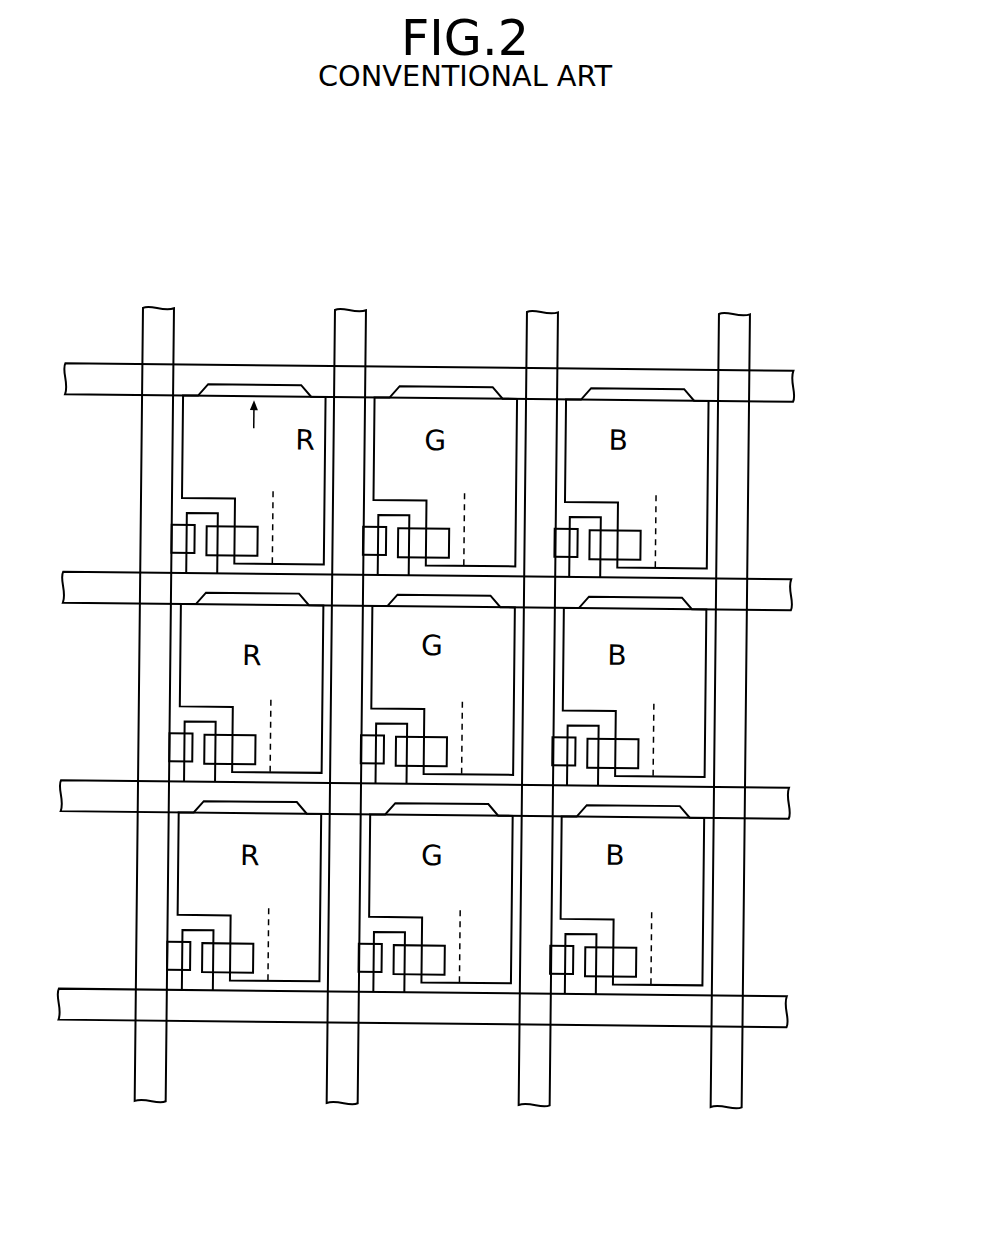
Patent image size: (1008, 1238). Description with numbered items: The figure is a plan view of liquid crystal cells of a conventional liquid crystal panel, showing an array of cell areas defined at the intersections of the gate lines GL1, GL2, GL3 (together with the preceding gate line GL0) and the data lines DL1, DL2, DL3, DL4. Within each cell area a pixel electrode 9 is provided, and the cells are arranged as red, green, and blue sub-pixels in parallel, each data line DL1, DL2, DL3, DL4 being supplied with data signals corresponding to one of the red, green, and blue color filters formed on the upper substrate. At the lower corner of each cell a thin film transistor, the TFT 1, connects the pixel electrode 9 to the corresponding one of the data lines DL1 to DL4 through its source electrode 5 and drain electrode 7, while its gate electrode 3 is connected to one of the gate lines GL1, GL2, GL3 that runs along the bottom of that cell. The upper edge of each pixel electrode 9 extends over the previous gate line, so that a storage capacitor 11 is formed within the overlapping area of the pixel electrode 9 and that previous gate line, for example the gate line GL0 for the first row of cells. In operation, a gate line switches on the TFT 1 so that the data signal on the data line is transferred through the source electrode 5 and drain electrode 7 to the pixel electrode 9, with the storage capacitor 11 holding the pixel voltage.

The TFT 1 is at (261, 502).
The gate electrode 3 is at (201, 516).
The source electrode 5 is at (186, 543).
The drain electrode 7 is at (240, 532).
The pixel electrode 9 is at (220, 439).
The storage capacitor 11 is at (262, 426).
The data line DL1 is at (155, 310).
The data line DL2 is at (347, 310).
The data line DL3 is at (539, 310).
The data line DL4 is at (731, 310).
The gate line GL0 is at (791, 383).
The gate line GL1 is at (791, 592).
The gate line GL2 is at (791, 800).
The gate line GL3 is at (791, 1008).